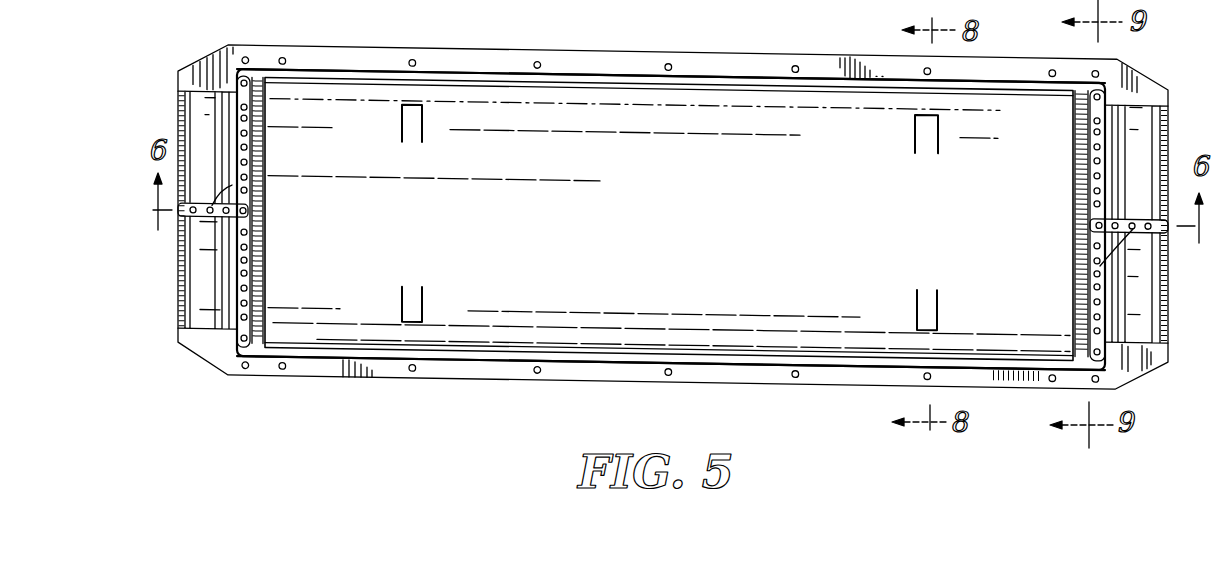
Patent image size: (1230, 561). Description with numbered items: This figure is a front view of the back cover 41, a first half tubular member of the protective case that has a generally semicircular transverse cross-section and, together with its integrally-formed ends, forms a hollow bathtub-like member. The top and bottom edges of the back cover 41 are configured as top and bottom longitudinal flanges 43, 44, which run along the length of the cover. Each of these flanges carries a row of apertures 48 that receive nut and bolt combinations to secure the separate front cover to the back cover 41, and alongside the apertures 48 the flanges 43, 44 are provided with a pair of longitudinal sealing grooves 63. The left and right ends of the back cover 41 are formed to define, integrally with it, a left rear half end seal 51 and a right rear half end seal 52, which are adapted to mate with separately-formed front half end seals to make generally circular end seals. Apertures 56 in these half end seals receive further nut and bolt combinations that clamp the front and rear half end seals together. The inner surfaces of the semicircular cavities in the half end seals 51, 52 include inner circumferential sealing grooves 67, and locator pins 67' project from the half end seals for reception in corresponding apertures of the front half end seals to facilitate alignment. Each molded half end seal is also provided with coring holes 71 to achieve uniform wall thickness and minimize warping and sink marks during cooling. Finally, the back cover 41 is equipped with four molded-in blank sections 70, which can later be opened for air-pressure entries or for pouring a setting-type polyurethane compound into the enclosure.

The back cover 41 is at (618, 45).
The top longitudinal flange 43 is at (445, 57).
The bottom longitudinal flange 44 is at (449, 368).
The apertures 48 is at (671, 64).
The left rear half end seal 51 is at (266, 269).
The right rear half end seal 52 is at (1137, 268).
The apertures 56 is at (200, 206).
The longitudinal sealing grooves 63 is at (605, 74).
The inner circumferential sealing grooves 67 is at (671, 218).
The locator pins 67' is at (672, 236).
The molded-in blank sections 70 is at (918, 123).
The coring holes 71 is at (248, 290).